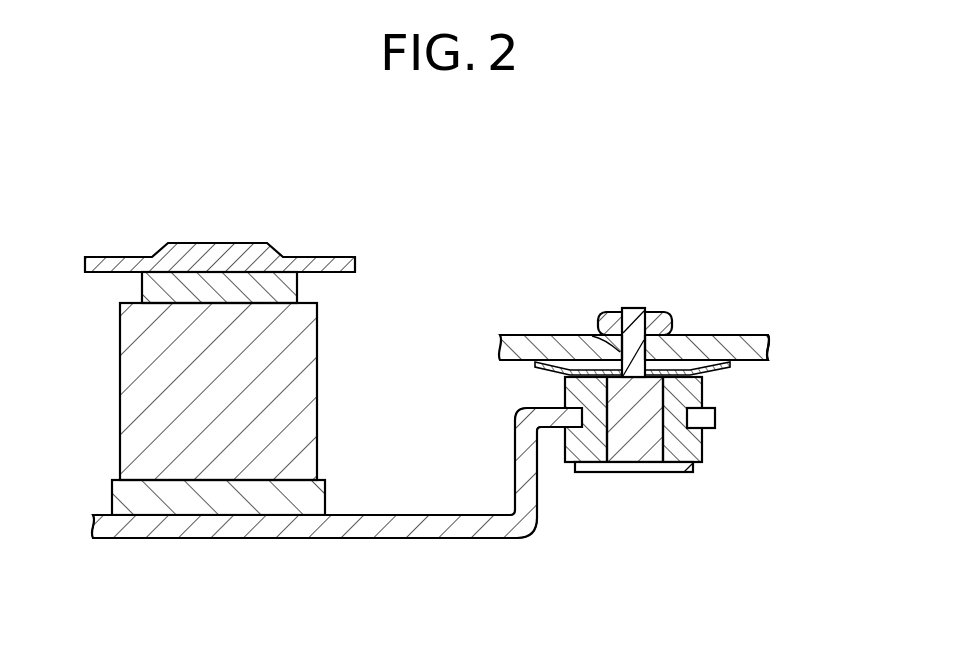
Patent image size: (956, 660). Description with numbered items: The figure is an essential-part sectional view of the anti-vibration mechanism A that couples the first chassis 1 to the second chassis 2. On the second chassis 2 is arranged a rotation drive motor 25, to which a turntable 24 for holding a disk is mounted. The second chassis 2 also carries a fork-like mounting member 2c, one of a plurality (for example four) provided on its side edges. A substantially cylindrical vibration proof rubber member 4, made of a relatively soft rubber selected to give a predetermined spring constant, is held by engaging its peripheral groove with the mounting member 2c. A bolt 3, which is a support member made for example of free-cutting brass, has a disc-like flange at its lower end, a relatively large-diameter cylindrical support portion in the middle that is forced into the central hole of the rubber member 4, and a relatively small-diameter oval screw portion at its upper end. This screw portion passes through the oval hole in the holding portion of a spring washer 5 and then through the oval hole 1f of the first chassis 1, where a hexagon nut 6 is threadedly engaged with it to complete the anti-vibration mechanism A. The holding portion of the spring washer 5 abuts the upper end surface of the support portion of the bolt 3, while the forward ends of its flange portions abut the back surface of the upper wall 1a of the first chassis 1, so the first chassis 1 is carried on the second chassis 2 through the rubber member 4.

The first chassis 1 is at (756, 318).
The upper wall of the first chassis 1a is at (723, 335).
The oval hole of the first chassis 1f is at (590, 335).
The second chassis 2 is at (432, 538).
The fork-like mounting member 2c is at (715, 418).
The bolt 3 is at (650, 467).
The vibration proof rubber member 4 is at (702, 452).
The spring washer 5 is at (728, 370).
The hexagon nut 6 is at (657, 312).
The turntable 24 is at (317, 262).
The rotation drive motor 25 is at (137, 387).
The anti-vibration mechanism A is at (792, 348).